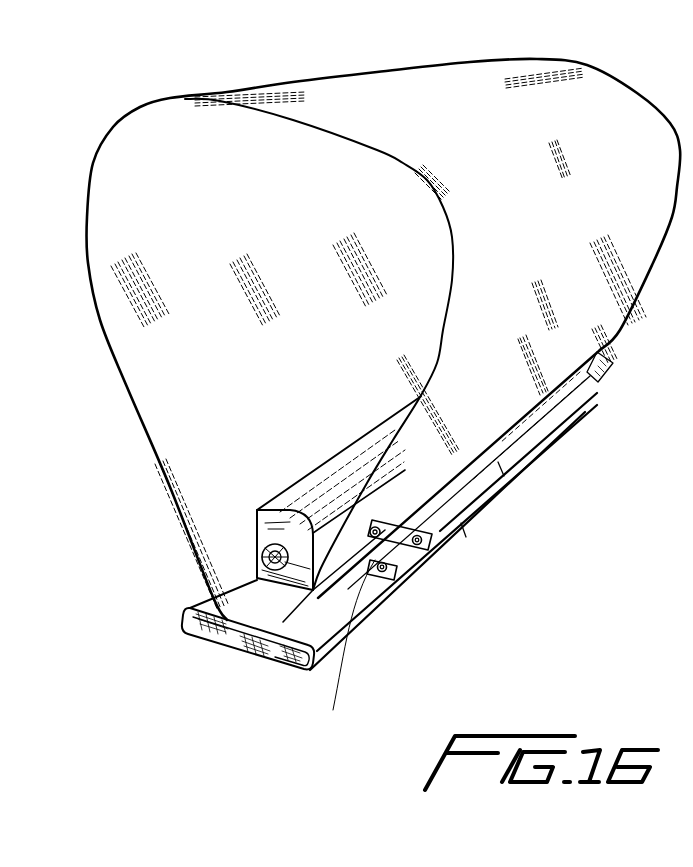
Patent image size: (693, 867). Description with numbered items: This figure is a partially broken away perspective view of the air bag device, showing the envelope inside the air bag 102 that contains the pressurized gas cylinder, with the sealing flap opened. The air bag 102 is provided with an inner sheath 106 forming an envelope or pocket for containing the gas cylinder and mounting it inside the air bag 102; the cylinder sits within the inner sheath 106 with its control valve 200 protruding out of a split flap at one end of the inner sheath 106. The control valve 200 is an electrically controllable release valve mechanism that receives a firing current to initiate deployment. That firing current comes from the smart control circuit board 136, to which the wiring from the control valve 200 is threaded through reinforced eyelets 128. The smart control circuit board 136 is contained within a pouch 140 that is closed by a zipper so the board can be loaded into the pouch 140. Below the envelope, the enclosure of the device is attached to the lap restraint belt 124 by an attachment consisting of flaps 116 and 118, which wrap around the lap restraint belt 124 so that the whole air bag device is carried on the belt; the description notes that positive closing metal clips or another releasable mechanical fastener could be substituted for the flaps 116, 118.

The air bag 102 is at (655, 199).
The inner sheath 106 is at (337, 477).
The flap 116 is at (325, 652).
The flap 118 is at (203, 665).
The lap restraint belt 124 is at (223, 654).
The reinforced eyelets 128 is at (387, 530).
The smart control circuit board 136 is at (468, 527).
The pouch 140 is at (506, 461).
The control valve 200 is at (258, 546).